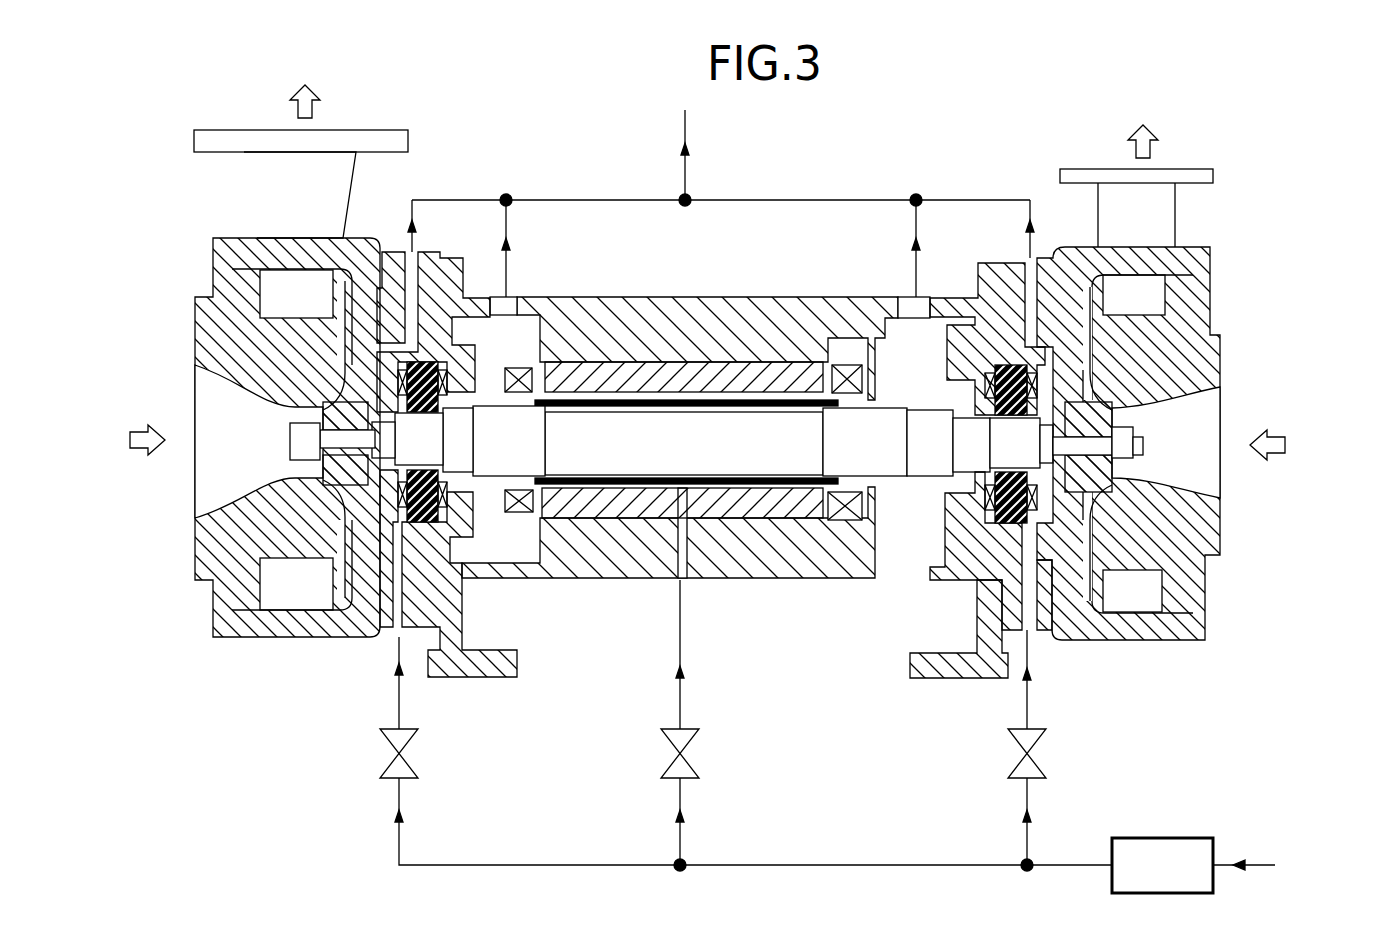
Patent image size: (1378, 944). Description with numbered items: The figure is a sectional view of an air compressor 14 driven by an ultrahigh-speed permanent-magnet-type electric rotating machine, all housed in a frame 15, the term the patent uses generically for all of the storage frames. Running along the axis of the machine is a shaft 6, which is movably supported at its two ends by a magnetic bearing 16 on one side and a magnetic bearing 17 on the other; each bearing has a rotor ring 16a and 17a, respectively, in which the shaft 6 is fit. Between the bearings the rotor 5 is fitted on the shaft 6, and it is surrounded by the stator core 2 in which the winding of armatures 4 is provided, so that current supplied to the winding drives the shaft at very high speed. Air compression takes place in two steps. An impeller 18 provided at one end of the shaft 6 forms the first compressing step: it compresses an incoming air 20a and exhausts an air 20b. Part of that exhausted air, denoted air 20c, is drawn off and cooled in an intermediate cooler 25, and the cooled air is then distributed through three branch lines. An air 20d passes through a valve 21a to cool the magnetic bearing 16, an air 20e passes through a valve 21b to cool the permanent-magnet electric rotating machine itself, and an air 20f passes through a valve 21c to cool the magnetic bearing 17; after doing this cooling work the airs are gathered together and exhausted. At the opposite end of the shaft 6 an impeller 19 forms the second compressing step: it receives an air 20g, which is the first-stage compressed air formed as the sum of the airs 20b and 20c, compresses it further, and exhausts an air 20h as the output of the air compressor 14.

The stator core 2 is at (755, 515).
The winding of armatures 4 is at (845, 520).
The rotor 5 is at (620, 484).
The shaft 6 is at (492, 463).
The air compressor 14 is at (727, 297).
The frame 15 is at (620, 317).
The magnetic bearing 16 is at (428, 360).
The rotor ring 16a is at (440, 408).
The magnetic bearing 17 is at (975, 305).
The rotor ring 17a is at (990, 410).
The impeller 18 is at (323, 470).
The impeller 19 is at (1112, 470).
The air 20a is at (120, 440).
The air 20b is at (308, 85).
The air 20c is at (1271, 867).
The air 20d is at (429, 816).
The air 20e is at (710, 816).
The air 20f is at (1053, 816).
The air 20g is at (1296, 445).
The air 20h is at (1145, 126).
The valve 21a is at (407, 745).
The valve 21b is at (689, 745).
The valve 21c is at (1036, 745).
The intermediate cooler 25 is at (1168, 848).